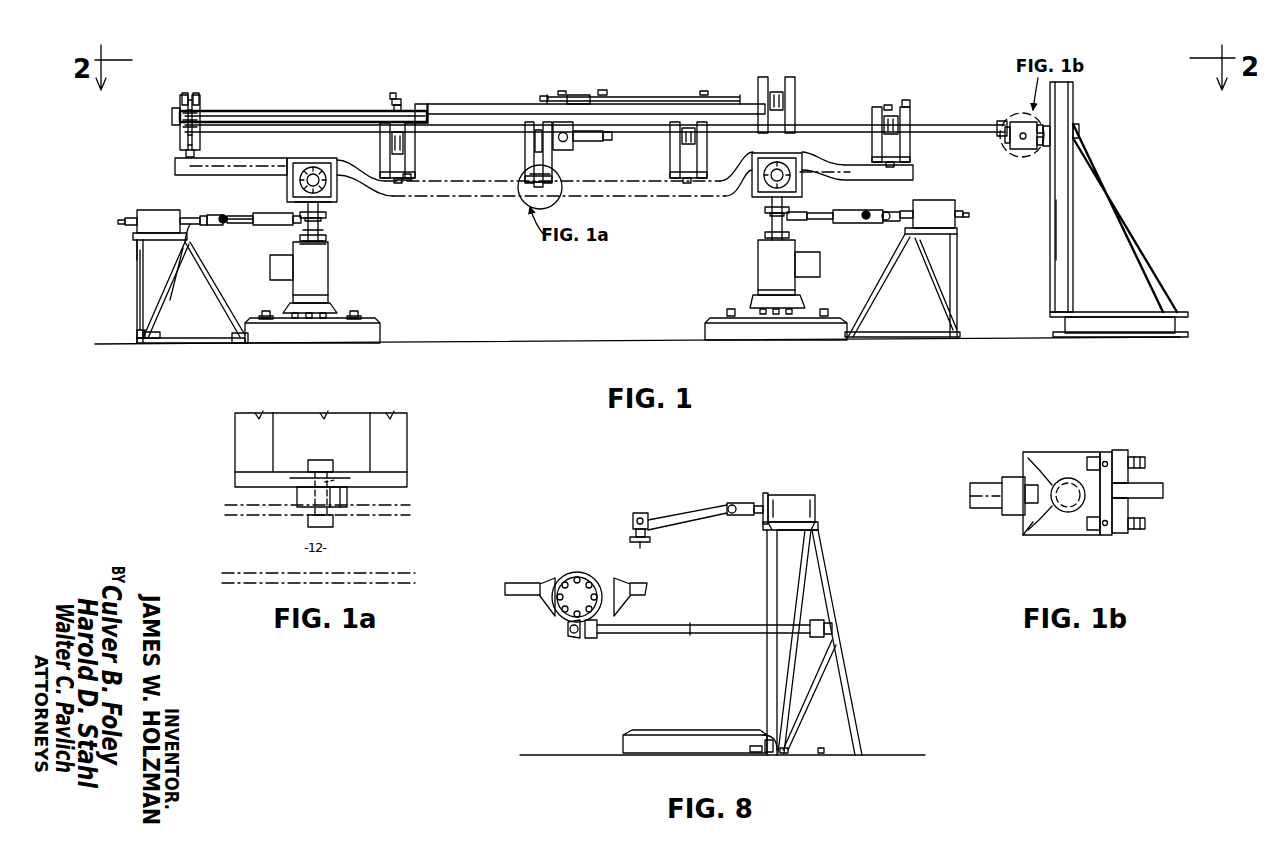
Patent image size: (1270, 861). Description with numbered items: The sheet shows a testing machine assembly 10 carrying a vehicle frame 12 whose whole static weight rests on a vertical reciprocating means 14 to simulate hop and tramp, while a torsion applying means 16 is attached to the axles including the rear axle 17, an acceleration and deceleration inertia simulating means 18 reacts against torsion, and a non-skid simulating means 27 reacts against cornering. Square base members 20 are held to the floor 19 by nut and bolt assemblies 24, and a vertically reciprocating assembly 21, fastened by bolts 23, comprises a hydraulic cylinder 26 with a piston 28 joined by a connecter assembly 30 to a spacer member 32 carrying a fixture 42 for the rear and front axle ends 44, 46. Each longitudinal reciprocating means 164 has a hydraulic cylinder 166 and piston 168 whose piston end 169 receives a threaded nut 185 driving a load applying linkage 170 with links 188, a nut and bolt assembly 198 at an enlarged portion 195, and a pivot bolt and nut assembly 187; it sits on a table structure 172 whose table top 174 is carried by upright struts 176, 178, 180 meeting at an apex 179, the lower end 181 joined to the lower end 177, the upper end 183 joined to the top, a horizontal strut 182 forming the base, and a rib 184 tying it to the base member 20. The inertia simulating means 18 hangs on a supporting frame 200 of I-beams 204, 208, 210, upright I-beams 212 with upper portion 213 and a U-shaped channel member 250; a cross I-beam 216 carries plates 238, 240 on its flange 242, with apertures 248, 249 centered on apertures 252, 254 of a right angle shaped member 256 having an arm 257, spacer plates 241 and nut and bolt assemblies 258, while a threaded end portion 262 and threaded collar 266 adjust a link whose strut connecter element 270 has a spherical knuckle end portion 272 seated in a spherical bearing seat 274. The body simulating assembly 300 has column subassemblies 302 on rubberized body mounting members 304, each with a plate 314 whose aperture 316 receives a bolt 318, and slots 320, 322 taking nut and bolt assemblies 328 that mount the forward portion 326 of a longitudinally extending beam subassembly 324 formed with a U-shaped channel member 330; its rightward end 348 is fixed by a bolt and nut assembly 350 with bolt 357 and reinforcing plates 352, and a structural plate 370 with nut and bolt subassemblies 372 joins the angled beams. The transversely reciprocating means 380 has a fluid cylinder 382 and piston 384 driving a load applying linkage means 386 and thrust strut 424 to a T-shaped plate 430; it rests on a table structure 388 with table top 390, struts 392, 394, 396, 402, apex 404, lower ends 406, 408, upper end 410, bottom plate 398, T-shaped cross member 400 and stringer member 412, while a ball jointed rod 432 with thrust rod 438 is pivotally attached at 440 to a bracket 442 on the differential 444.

In FIG. 1, the testing machine assembly 10 is at (445, 75).
In FIG. 1, the vehicle frame 12 is at (500, 196).
In FIG. 1A, the vehicle frame 12 is at (318, 544).
In FIG. 1, the vertical reciprocating means 14 is at (330, 214).
In FIG. 1, the torsion applying means 16 is at (240, 212).
In FIG. 8, the rear axle 17 is at (525, 583).
In FIG. 1, the acceleration and deceleration inertia simulating means 18 is at (952, 124).
In FIG. 1, the floor 19 is at (522, 343).
In FIG. 8, the floor 19 is at (540, 755).
In FIG. 1, the base member 20 is at (378, 337).
In FIG. 8, the base member 20 is at (625, 747).
In FIG. 1, the vertically reciprocating assembly 21 is at (340, 262).
In FIG. 1, the bolts 23 is at (329, 312).
In FIG. 1, the nut and bolt assemblies 24 is at (364, 316).
In FIG. 1, the hydraulic cylinder 26 is at (326, 277).
In FIG. 8, the non-skid simulating means 27 is at (588, 674).
In FIG. 1, the piston 28 is at (326, 243).
In FIG. 1, the connecter assembly 30 is at (298, 241).
In FIG. 1, the spacer member 32 is at (303, 229).
In FIG. 1, the fixture 42 is at (347, 190).
In FIG. 1, the rear axle end 44 is at (749, 173).
In FIG. 1, the front axle end 46 is at (283, 184).
In FIG. 1, the longitudinal reciprocating means 164 is at (156, 206).
In FIG. 1, the hydraulic cylinder 166 is at (150, 213).
In FIG. 1, the piston 168 is at (188, 216).
In FIG. 1, the piston end 169 is at (194, 232).
In FIG. 1, the load applying linkage means 170 is at (248, 216).
In FIG. 1, the table structure 172 is at (126, 306).
In FIG. 1, the table top 174 is at (160, 240).
In FIG. 1, the upright strut 176 is at (213, 290).
In FIG. 1, the lower end 177 is at (158, 336).
In FIG. 1, the upright strut 178 is at (160, 300).
In FIG. 1, the apex 179 is at (178, 268).
In FIG. 1, the upright strut 180 is at (137, 285).
In FIG. 1, the lower end 181 is at (138, 335).
In FIG. 1, the horizontal strut 182 is at (190, 344).
In FIG. 1, the upper end 183 is at (137, 252).
In FIG. 1, the rib 184 is at (238, 343).
In FIG. 1, the threaded nut 185 is at (870, 210).
In FIG. 1, the pivot bolt and nut assembly 187 is at (207, 225).
In FIG. 1, the links 188 is at (221, 218).
In FIG. 1, the enlarged portion 195 is at (860, 228).
In FIG. 1, the nut and bolt assembly 198 is at (863, 213).
In FIG. 1, the supporting frame 200 is at (1142, 216).
In FIG. 1, the I-beam member 204 is at (1120, 334).
In FIG. 1, the I-beam 208 is at (1050, 322).
In FIG. 1, the I-beam 210 is at (1186, 328).
In FIG. 1, the I-beam 212 is at (1060, 250).
In FIG. 1, the upper portion 213 is at (1069, 93).
In FIG. 1, the cross I-beam 216 is at (1043, 148).
In FIG. 1B, the cross I-beam 216 is at (1145, 490).
In FIG. 1B, the plate 238 is at (1113, 451).
In FIG. 1B, the plate 240 is at (1120, 537).
In FIG. 1B, the spacer plates 241 is at (1105, 454).
In FIG. 1B, the flange 242 is at (1128, 500).
In FIG. 1B, the apertures 248 is at (1150, 474).
In FIG. 1B, the apertures 249 is at (1150, 512).
In FIG. 1, the U-shaped channel member 250 is at (1078, 126).
In FIG. 1B, the apertures 252 is at (1087, 459).
In FIG. 1B, the apertures 254 is at (1096, 532).
In FIG. 1, the right angle shaped member 256 is at (1010, 112).
In FIG. 1B, the right angle shaped member 256 is at (1052, 540).
In FIG. 1B, the longitudinally extending arm 257 is at (1028, 521).
In FIG. 1B, the nut and bolt assemblies 258 is at (1146, 462).
In FIG. 1B, the threaded end portion 262 is at (1020, 482).
In FIG. 1B, the threaded collar 266 is at (1004, 510).
In FIG. 1B, the strut connecter element 270 is at (1060, 478).
In FIG. 1B, the spherical knuckle end portion 272 is at (1040, 464).
In FIG. 1B, the spherical bearing seat 274 is at (1046, 512).
In FIG. 1, the body simulating assembly 300 is at (585, 93).
In FIG. 8, the body simulating assembly 300 is at (629, 531).
In FIG. 1, the column subassemblies 302 is at (176, 141).
In FIG. 1A, the column subassemblies 302 is at (233, 442).
In FIG. 1, the rubberized body mounting members 304 is at (196, 154).
In FIG. 1A, the rubberized body mounting members 304 is at (348, 496).
In FIG. 1, the plate 314 is at (403, 182).
In FIG. 1A, the plate 314 is at (298, 477).
In FIG. 1A, the aperture 316 is at (338, 478).
In FIG. 1, the bolt 318 is at (408, 178).
In FIG. 1A, the bolt 318 is at (318, 458).
In FIG. 1, the vertically extending slots 320 is at (185, 94).
In FIG. 1, the vertically extending slots 322 is at (198, 94).
In FIG. 1, the longitudinally extending beam subassembly 324 is at (296, 110).
In FIG. 1, the forward portion 326 is at (203, 125).
In FIG. 1, the nut and bolt assemblies 328 is at (202, 113).
In FIG. 1, the U-shaped channel member 330 is at (302, 114).
In FIG. 1, the rightward end 348 is at (428, 106).
In FIG. 1, the bolt and nut assembly 350 is at (397, 98).
In FIG. 1, the reinforcing plates 352 is at (390, 100).
In FIG. 1, the bolt 357 is at (394, 99).
In FIG. 1, the structural plate 370 is at (592, 97).
In FIG. 1, the nut and bolt subassemblies 372 is at (603, 92).
In FIG. 8, the transversely reciprocating means 380 is at (788, 493).
In FIG. 8, the fluid cylinder 382 is at (805, 500).
In FIG. 8, the piston 384 is at (760, 505).
In FIG. 8, the load applying linkage means 386 is at (735, 502).
In FIG. 8, the table structure 388 is at (842, 600).
In FIG. 8, the table top 390 is at (800, 528).
In FIG. 8, the upright strut 392 is at (846, 670).
In FIG. 8, the upright strut 394 is at (808, 590).
In FIG. 8, the upright strut 396 is at (766, 595).
In FIG. 8, the bottom plate 398 is at (822, 758).
In FIG. 8, the T-shaped cross member 400 is at (833, 626).
In FIG. 8, the strut 402 is at (800, 705).
In FIG. 8, the apex 404 is at (818, 540).
In FIG. 8, the lower end 406 is at (765, 757).
In FIG. 8, the lower end 408 is at (785, 758).
In FIG. 8, the upper end 410 is at (764, 540).
In FIG. 8, the stringer member 412 is at (768, 735).
In FIG. 8, the thrust strut 424 is at (672, 517).
In FIG. 8, the T-shaped plate 430 is at (634, 517).
In FIG. 8, the ball jointed rod 432 is at (680, 624).
In FIG. 8, the thrust rod 438 is at (692, 636).
In FIG. 8, the pivotal attachment 440 is at (572, 640).
In FIG. 8, the bracket 442 is at (568, 622).
In FIG. 8, the differential 444 is at (590, 574).